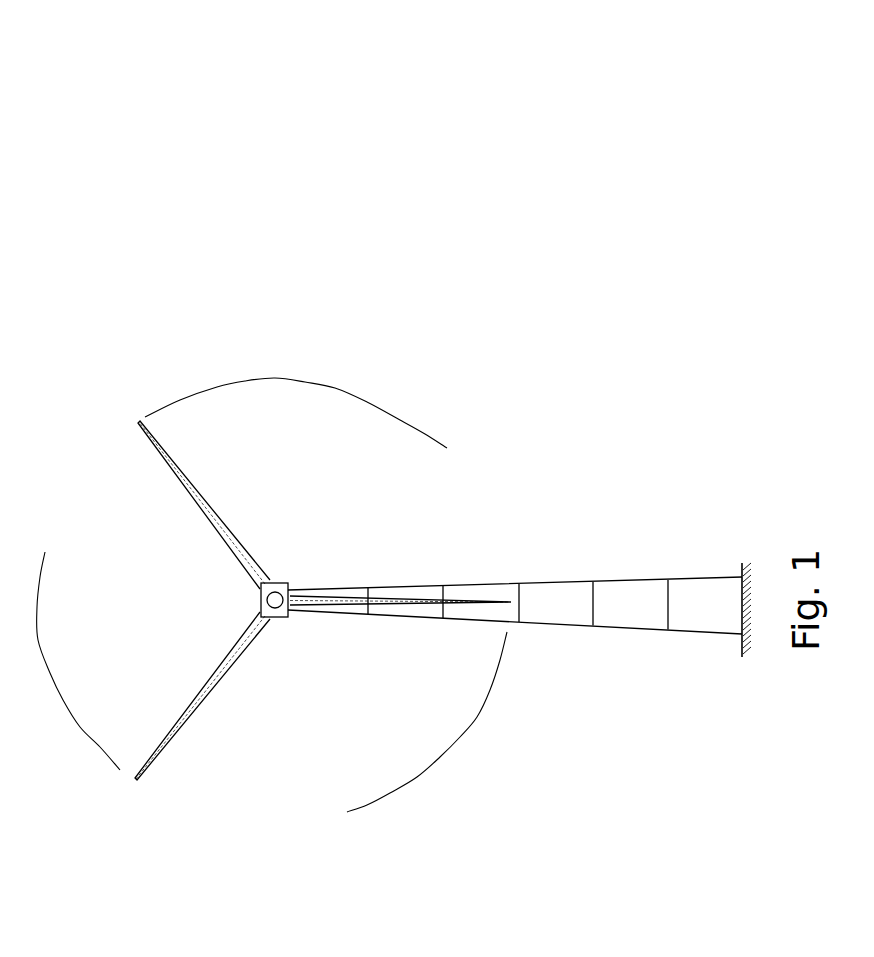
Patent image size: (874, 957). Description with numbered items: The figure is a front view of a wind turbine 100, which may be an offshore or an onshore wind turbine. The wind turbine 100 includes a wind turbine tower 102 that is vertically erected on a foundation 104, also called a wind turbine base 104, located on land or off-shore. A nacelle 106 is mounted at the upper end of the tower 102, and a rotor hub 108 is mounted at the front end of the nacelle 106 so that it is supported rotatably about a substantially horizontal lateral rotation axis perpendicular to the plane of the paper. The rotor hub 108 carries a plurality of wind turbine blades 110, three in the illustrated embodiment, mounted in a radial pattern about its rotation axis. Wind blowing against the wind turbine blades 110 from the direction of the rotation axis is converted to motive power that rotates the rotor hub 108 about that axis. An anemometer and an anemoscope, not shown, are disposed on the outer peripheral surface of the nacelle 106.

The wind turbine 100 is at (189, 144).
The wind turbine tower 102 is at (641, 637).
The foundation 104 is at (736, 570).
The nacelle 106 is at (275, 583).
The rotor hub 108 is at (277, 620).
The wind turbine blades 110 is at (178, 464).